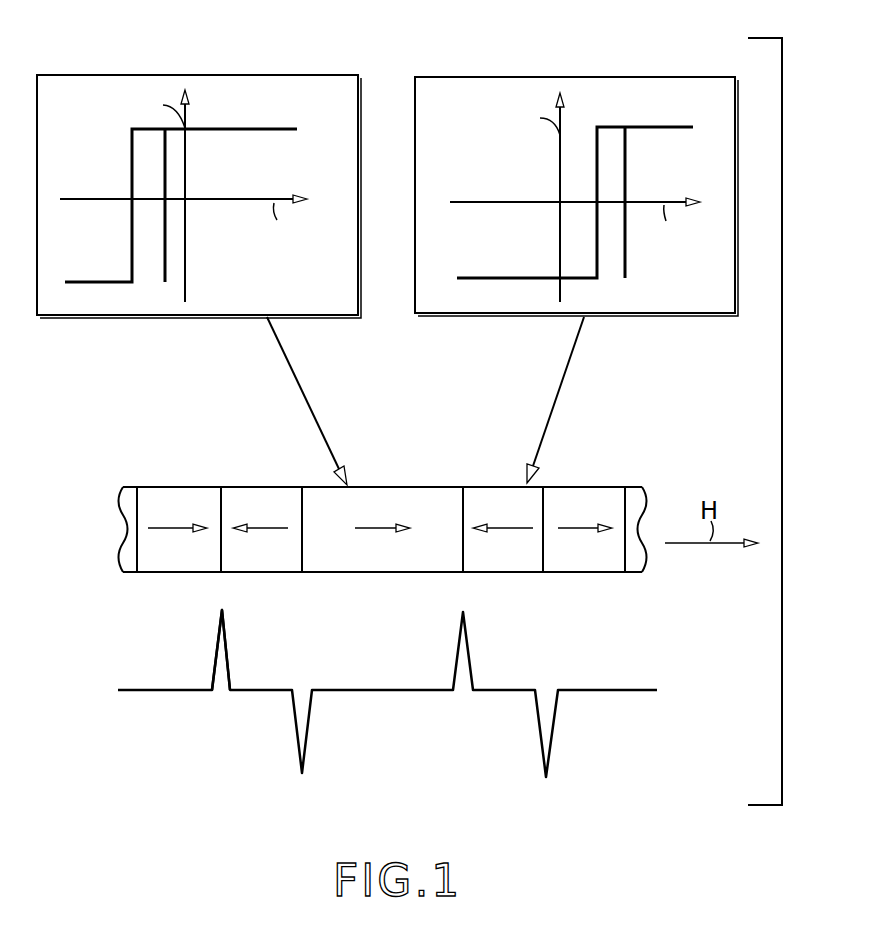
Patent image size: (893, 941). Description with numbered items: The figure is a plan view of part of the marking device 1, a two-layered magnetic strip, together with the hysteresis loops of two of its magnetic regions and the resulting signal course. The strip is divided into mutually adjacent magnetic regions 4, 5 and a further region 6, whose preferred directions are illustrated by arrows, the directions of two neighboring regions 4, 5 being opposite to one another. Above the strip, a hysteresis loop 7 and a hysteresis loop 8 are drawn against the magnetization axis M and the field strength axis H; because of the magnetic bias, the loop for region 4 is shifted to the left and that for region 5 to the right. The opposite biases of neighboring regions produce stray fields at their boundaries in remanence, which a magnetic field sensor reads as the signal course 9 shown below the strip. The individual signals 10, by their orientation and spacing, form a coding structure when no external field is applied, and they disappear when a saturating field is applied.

The marking device 1 is at (120, 575).
The magnetic region 4 is at (392, 487).
The magnetic region 5 is at (490, 487).
The ferromagnetic second layer 6 is at (633, 507).
The hysteresis loop 7 is at (132, 145).
The hysteresis loop 8 is at (655, 127).
The signal course 9 is at (138, 692).
The signals 10 is at (228, 640).